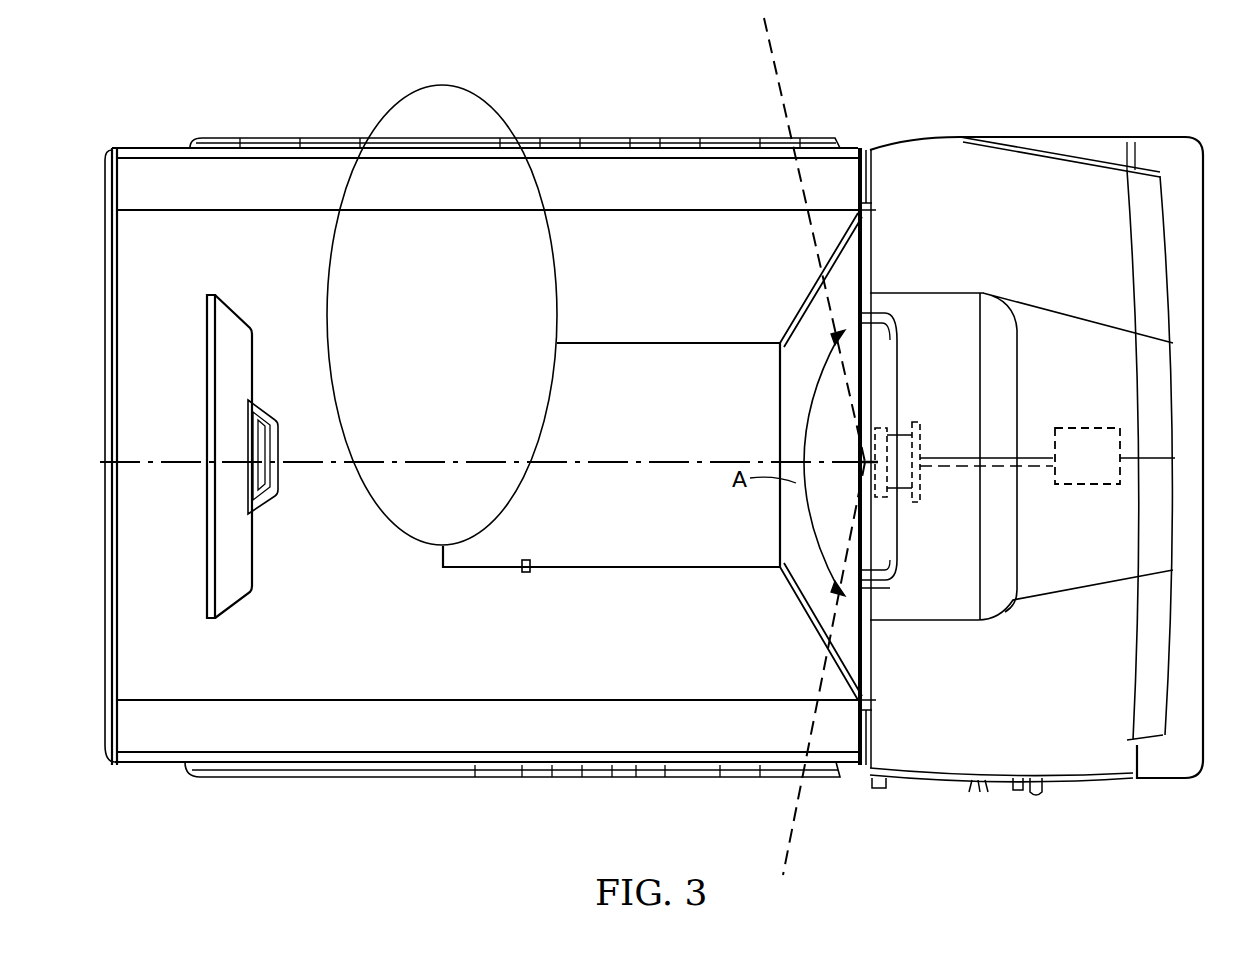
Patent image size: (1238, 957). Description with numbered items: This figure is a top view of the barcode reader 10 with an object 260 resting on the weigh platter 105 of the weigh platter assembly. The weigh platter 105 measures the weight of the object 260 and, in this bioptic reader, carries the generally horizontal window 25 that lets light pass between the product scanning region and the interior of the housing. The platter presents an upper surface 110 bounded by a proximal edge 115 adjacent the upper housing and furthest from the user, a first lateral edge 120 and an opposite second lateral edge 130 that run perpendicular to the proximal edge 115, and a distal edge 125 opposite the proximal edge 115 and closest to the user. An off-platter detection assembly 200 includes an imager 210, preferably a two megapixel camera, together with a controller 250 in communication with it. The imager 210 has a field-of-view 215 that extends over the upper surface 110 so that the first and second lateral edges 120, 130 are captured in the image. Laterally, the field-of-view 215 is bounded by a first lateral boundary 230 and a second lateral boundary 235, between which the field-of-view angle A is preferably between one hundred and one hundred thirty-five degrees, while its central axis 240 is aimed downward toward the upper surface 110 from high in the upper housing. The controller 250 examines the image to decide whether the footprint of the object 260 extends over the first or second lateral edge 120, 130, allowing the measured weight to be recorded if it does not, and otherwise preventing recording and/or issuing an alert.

The barcode reader 10 is at (900, 62).
The generally horizontal window 25 is at (690, 365).
The weigh platter 105 is at (158, 180).
The upper surface 110 is at (291, 256).
The proximal edge 115 is at (856, 193).
The first lateral edge 120 is at (641, 779).
The distal edge 125 is at (118, 258).
The second lateral edge 130 is at (628, 143).
The off-platter detection assembly 200 is at (917, 530).
The imager 210 is at (906, 450).
The field-of-view 215 is at (694, 182).
The first lateral boundary 230 is at (788, 835).
The second lateral boundary 235 is at (773, 58).
The central axis 240 is at (650, 461).
The controller 250 is at (1086, 428).
The object 260 is at (380, 112).